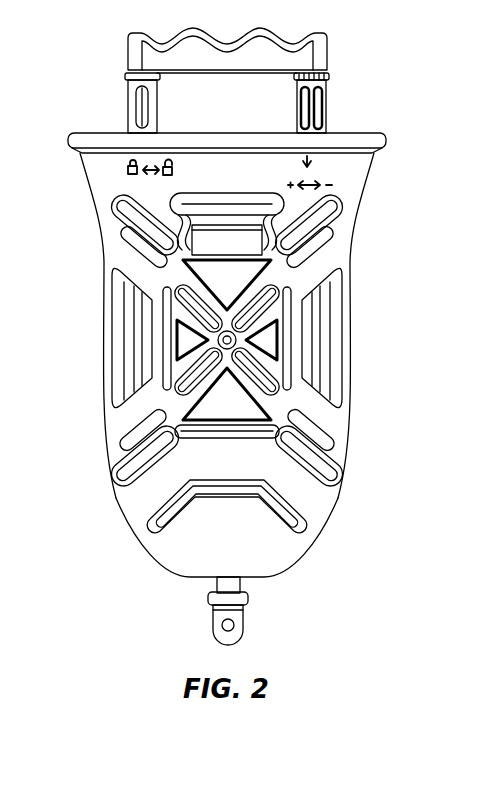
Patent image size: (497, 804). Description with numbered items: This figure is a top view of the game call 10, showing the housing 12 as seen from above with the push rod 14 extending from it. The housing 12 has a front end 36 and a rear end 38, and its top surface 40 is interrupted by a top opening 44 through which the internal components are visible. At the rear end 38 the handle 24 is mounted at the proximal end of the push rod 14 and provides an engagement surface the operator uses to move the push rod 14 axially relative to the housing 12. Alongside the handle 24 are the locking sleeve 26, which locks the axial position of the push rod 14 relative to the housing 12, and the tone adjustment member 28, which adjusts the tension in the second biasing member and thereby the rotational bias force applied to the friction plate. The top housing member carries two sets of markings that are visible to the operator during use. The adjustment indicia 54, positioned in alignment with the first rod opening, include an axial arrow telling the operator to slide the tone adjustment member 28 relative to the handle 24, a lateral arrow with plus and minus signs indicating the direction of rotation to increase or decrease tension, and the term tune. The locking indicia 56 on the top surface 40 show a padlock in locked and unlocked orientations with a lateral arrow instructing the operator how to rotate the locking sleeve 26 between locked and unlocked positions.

The game call 10 is at (376, 98).
The housing 12 is at (371, 188).
The push rod 14 is at (210, 618).
The handle 24 is at (290, 35).
The locking sleeve 26 is at (128, 108).
The tone adjustment member 28 is at (297, 105).
The front end 36 is at (295, 565).
The rear end 38 is at (90, 135).
The top surface 40 is at (310, 495).
The top opening 44 is at (215, 341).
The adjustment indicia 54 is at (324, 163).
The locking indicia 56 is at (135, 176).